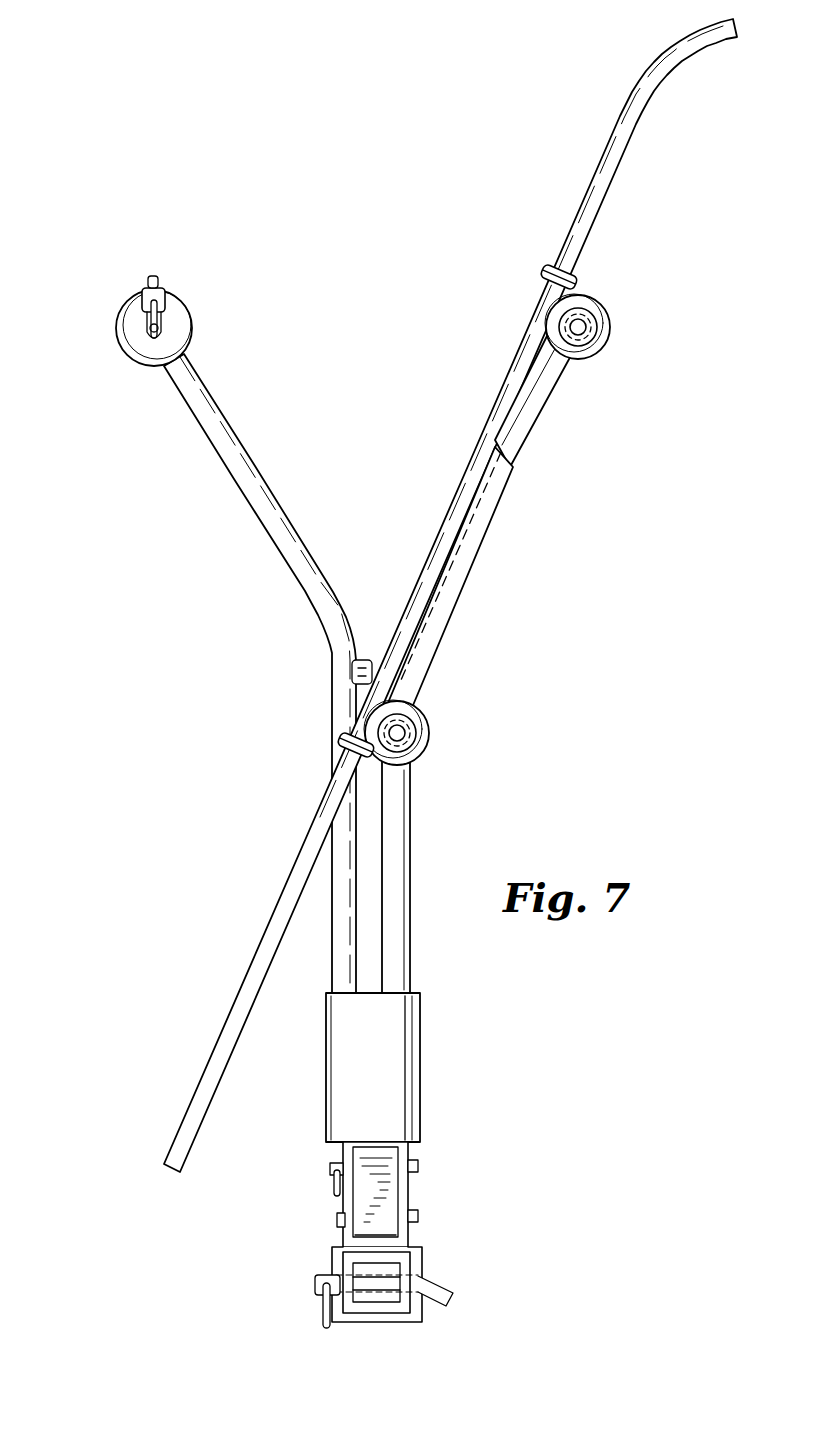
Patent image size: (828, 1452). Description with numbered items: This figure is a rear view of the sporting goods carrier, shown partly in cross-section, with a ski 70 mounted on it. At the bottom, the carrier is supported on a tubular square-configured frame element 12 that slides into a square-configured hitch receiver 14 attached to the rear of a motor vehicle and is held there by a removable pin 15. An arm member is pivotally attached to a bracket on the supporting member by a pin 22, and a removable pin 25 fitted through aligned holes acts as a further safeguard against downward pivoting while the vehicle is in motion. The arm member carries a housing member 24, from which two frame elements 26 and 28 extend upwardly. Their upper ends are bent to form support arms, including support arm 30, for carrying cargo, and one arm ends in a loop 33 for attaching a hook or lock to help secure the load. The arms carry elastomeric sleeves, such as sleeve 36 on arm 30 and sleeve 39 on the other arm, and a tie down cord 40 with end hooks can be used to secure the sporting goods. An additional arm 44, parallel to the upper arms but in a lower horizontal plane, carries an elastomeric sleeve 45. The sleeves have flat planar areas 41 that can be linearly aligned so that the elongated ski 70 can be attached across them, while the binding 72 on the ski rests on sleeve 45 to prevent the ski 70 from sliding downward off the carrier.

The tubular square-configured frame element 12 is at (408, 1266).
The hitch receiver 14 is at (410, 1318).
The removable pin 15 is at (313, 1280).
The pin 22 is at (420, 1217).
The housing member 24 is at (397, 1070).
The removable pin 25 is at (420, 1165).
The frame element 26 is at (523, 433).
The frame element 28 is at (250, 472).
The support arm 30 is at (592, 340).
The loop 33 is at (140, 332).
The elastomeric sleeve 36 is at (608, 312).
The elastomeric sleeve 39 is at (172, 350).
The tie down cord 40 is at (545, 272).
The flat planar area 41 is at (583, 298).
The additional arm 44 is at (418, 750).
The elastomeric sleeve 45 is at (430, 723).
The ski 70 is at (622, 136).
The binding 72 is at (440, 613).